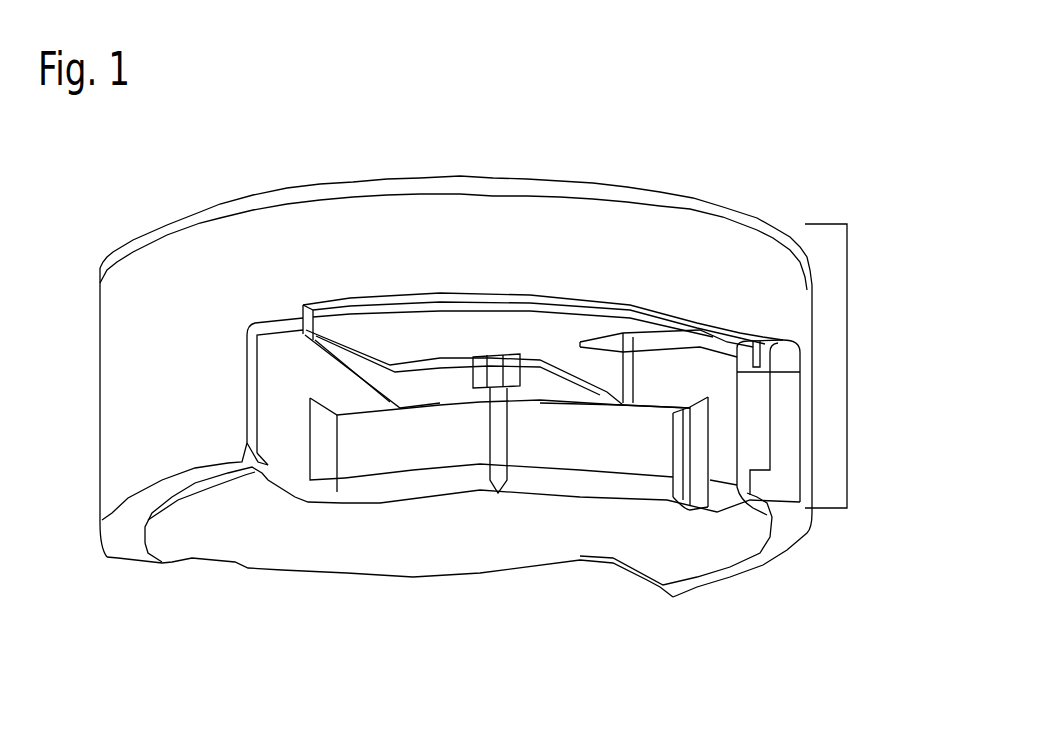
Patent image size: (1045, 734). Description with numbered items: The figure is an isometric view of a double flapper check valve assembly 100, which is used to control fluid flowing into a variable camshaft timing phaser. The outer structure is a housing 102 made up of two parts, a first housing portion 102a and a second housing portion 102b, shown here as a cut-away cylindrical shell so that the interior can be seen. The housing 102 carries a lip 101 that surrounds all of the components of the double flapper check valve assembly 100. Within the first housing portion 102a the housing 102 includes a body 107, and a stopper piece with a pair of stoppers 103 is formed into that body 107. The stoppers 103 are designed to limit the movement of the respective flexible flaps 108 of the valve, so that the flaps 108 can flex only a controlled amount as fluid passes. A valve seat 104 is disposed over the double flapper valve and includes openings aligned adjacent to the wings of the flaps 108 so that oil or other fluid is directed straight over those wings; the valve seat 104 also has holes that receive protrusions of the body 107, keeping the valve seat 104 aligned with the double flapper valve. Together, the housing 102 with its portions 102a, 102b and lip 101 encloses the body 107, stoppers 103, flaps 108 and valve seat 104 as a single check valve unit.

The double flapper check valve assembly 100 is at (708, 152).
The lip 101 is at (98, 417).
The housing 102 is at (847, 363).
The first housing portion 102a is at (507, 543).
The second housing portion 102b is at (278, 225).
The stoppers 103 is at (478, 370).
The valve seat 104 is at (612, 342).
The body 107 is at (688, 372).
The flexible flaps 108 is at (450, 322).